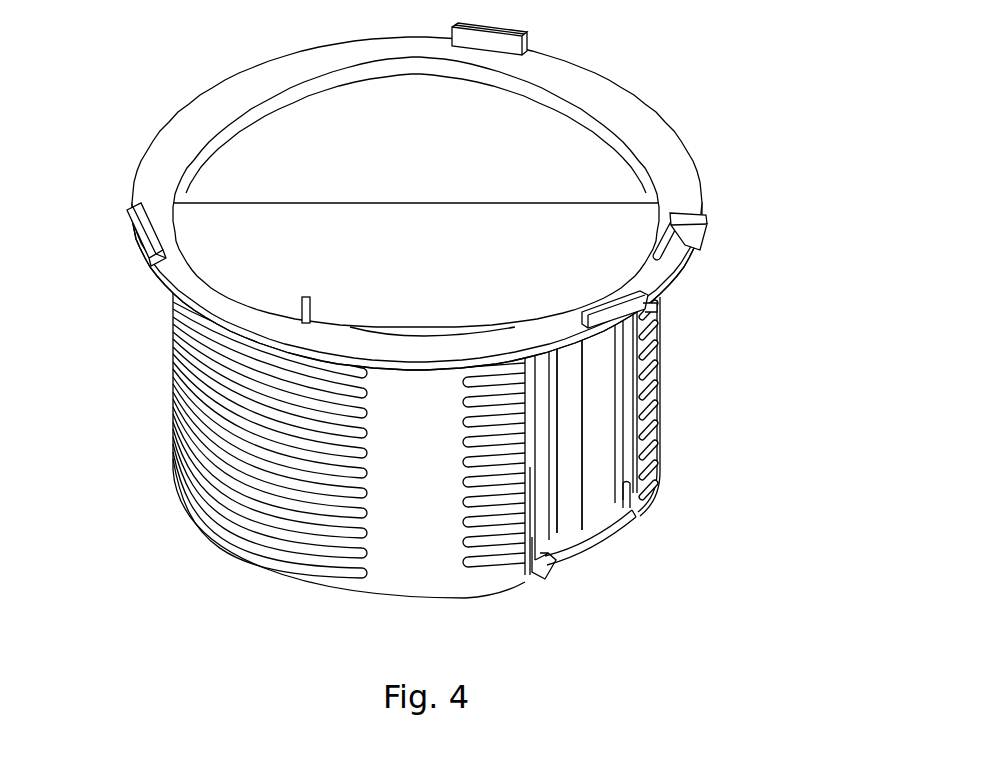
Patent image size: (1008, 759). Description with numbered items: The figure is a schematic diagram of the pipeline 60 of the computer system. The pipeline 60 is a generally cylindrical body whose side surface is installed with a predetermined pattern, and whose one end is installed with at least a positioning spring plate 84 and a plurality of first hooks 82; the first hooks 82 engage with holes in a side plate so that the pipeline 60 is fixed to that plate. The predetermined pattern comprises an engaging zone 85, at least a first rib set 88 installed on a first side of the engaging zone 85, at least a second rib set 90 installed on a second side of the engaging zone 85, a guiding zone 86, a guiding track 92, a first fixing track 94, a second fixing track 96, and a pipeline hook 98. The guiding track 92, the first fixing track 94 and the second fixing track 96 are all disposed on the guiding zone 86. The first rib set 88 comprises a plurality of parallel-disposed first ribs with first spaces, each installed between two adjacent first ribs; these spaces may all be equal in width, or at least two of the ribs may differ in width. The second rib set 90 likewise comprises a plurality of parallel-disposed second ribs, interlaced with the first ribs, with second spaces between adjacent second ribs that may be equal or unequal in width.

The pipeline 60 is at (448, 321).
The first hooks 82 is at (490, 38).
The positioning spring plate 84 is at (690, 232).
The engaging zone 85 is at (382, 542).
The guiding zone 86 is at (574, 455).
The first rib set 88 is at (300, 548).
The second rib set 90 is at (500, 512).
The guiding track 92 is at (588, 395).
The first fixing track 94 is at (552, 560).
The second fixing track 96 is at (626, 520).
The pipeline hook 98 is at (600, 545).